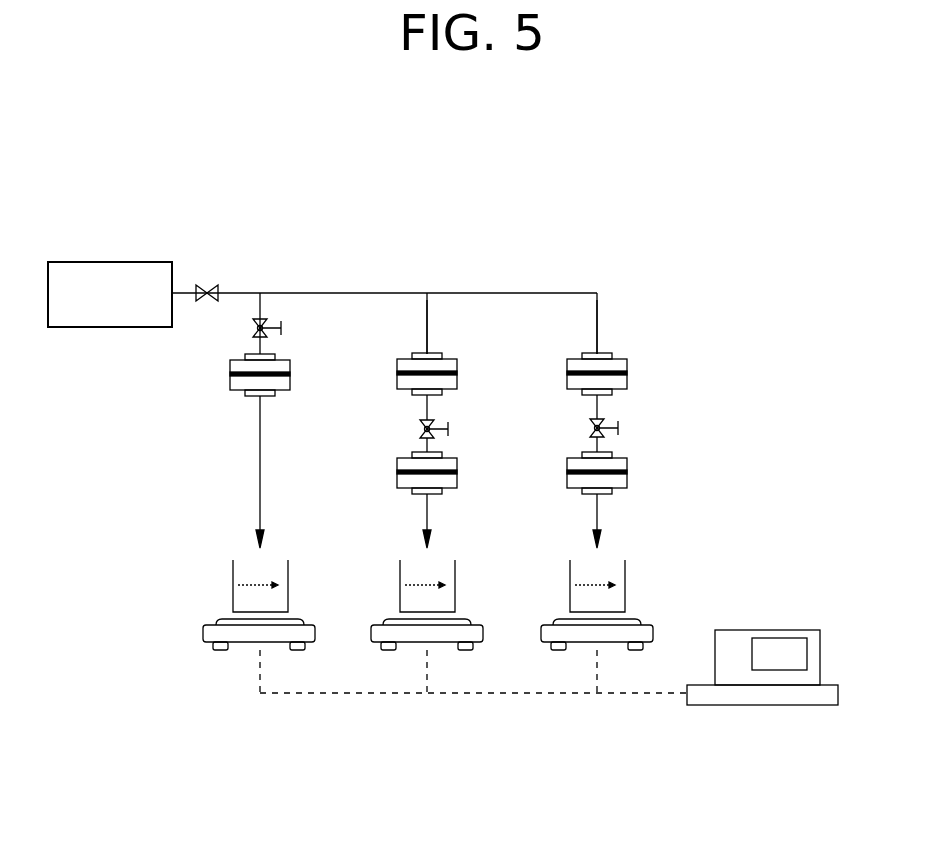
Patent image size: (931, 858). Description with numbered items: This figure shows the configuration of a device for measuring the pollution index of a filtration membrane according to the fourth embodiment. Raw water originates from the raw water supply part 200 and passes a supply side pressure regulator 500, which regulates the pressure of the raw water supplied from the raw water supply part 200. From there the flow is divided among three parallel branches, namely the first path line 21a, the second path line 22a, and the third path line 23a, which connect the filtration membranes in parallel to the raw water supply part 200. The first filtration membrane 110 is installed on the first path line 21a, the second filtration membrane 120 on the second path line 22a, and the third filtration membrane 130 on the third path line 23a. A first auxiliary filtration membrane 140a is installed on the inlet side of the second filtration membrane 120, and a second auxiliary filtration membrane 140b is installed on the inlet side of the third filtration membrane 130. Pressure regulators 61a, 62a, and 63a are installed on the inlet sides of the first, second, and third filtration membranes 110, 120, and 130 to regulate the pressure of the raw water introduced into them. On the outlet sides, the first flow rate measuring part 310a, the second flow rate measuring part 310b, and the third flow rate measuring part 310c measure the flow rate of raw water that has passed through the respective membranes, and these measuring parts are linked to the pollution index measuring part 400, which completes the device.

The raw water supply part 200 is at (100, 262).
The supply side pressure regulator 500 is at (207, 270).
The pressure regulator 61a is at (265, 325).
The pressure regulator 62a is at (423, 428).
The pressure regulator 63a is at (593, 428).
The second path line 22a is at (427, 320).
The third path line 23a is at (597, 328).
The first path line 21a is at (258, 436).
The first filtration membrane 110 is at (230, 373).
The second filtration membrane 120 is at (397, 477).
The third filtration membrane 130 is at (567, 477).
The first auxiliary filtration membrane 140a is at (397, 372).
The second auxiliary filtration membrane 140b is at (567, 372).
The first flow rate measuring part 310a is at (190, 638).
The second flow rate measuring part 310b is at (391, 665).
The third flow rate measuring part 310c is at (658, 610).
The pollution index measuring part 400 is at (772, 706).